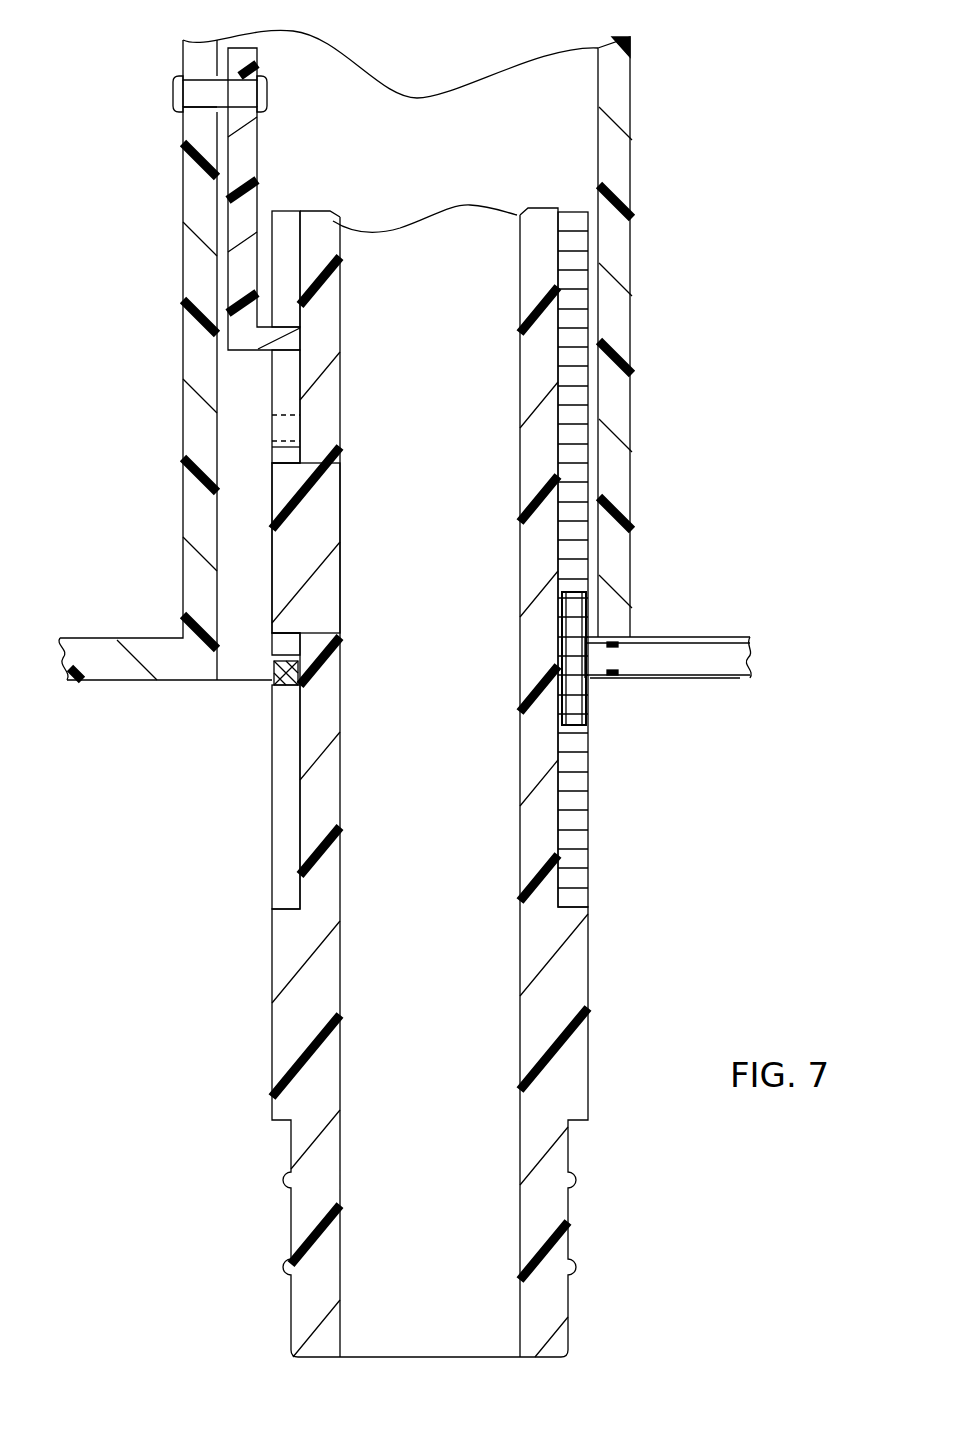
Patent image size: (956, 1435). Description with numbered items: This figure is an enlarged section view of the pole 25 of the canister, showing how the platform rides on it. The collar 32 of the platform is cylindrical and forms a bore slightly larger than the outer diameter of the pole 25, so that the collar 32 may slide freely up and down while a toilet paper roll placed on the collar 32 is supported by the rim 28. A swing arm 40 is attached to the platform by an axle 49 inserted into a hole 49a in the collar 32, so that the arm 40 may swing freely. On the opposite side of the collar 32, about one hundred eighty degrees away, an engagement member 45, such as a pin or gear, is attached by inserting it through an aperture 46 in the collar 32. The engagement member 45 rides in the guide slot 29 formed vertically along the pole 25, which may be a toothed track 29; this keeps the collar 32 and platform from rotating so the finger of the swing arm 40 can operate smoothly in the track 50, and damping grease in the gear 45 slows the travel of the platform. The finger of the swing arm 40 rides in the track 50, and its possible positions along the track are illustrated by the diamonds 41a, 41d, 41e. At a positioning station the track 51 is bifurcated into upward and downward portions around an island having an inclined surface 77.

The pole 25 is at (285, 962).
The rim 28 is at (710, 680).
The guide slot 29 is at (577, 820).
The collar 32 is at (190, 242).
The swing arm 40 is at (248, 147).
The finger 41a is at (272, 415).
The finger 41d is at (292, 343).
The finger 41e is at (287, 682).
The engagement member 45 is at (595, 672).
The aperture 46 is at (695, 638).
The axle 49 is at (205, 93).
The hole 49a is at (207, 108).
The track 50 is at (288, 715).
The track 51 is at (280, 220).
The inclined surface 77 is at (288, 533).